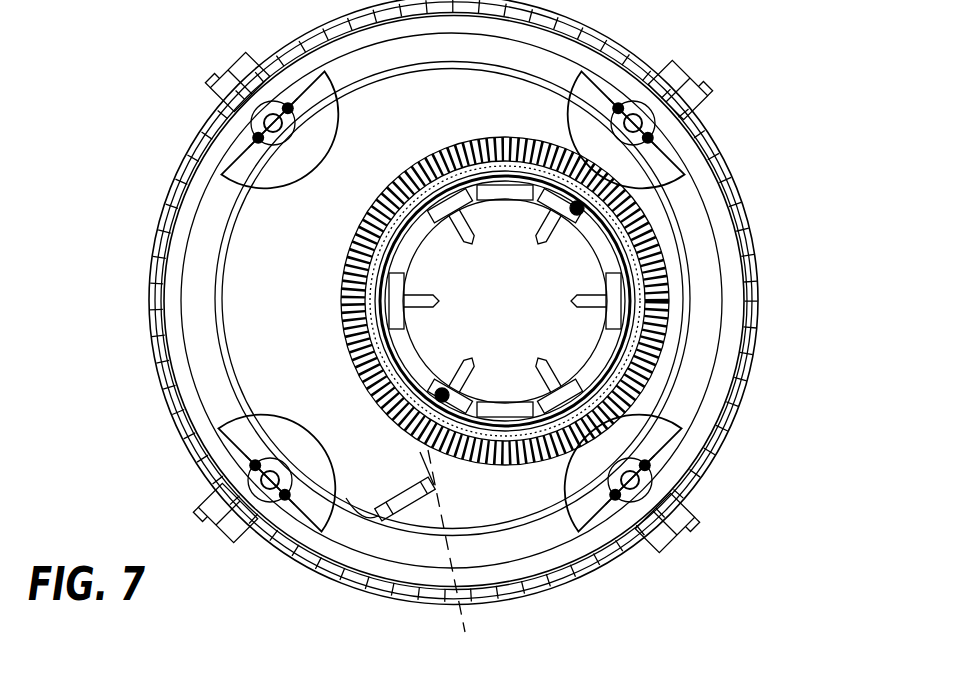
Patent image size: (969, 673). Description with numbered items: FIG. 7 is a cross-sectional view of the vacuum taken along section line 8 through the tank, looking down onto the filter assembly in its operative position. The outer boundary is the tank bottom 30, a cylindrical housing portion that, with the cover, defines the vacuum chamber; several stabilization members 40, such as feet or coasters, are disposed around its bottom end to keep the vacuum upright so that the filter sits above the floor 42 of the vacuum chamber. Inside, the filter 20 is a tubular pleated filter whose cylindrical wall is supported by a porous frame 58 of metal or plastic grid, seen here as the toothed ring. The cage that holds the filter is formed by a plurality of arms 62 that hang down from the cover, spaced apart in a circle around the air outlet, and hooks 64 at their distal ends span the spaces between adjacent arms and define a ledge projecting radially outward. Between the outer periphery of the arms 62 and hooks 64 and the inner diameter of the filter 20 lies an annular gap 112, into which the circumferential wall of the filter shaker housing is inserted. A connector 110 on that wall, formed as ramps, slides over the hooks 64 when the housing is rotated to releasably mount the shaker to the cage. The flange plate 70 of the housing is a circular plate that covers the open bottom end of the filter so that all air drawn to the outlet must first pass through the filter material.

The section line 8 is at (453, 561).
The filter 20 is at (431, 150).
The tank bottom 30 is at (175, 204).
The stabilization members 40 is at (246, 66).
The floor of the vacuum chamber 42 is at (240, 258).
The porous frame 58 is at (403, 172).
The arms 62 is at (540, 230).
The hooks 64 is at (366, 234).
The flange plate 70 is at (577, 267).
The connector 110 is at (344, 348).
The annular gap 112 is at (342, 294).